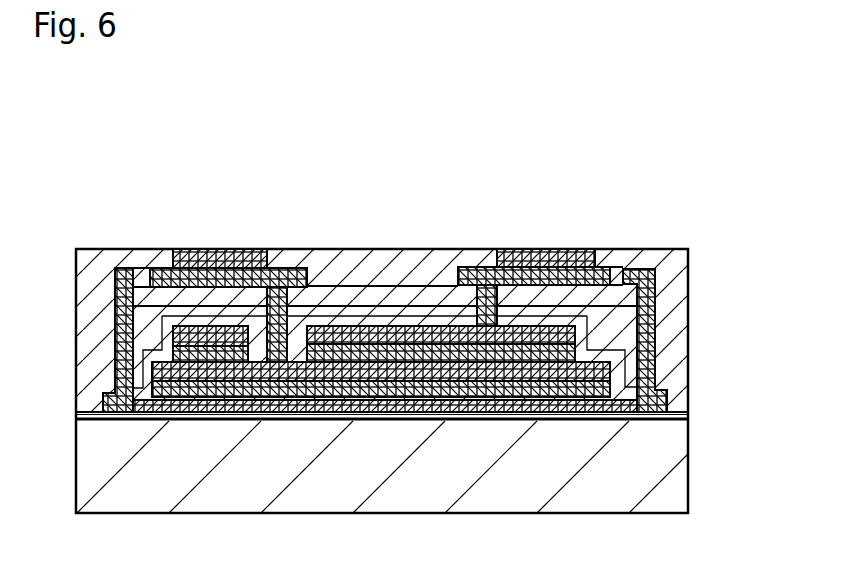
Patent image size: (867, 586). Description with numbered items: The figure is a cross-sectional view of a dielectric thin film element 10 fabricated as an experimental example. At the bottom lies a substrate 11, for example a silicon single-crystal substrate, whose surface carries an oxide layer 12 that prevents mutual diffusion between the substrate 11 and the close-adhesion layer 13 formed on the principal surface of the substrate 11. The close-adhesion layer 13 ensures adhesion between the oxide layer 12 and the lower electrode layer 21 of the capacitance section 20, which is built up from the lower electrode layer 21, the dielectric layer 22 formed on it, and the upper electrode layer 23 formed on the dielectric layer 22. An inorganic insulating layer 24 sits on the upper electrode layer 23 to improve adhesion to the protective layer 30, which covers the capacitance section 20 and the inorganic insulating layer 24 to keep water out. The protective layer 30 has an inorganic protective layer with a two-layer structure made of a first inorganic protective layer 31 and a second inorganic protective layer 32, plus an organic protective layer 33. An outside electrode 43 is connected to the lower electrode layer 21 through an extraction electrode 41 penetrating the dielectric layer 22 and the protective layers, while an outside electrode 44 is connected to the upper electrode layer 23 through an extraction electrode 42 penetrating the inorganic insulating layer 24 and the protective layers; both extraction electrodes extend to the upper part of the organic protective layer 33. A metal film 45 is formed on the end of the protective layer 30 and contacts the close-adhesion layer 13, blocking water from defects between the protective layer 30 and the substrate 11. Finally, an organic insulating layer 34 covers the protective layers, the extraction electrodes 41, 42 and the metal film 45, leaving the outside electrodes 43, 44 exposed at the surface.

The dielectric thin film element 10 is at (58, 109).
The substrate 11 is at (608, 487).
The oxide layer 12 is at (637, 419).
The close-adhesion layer 13 is at (622, 415).
The capacitance section 20 is at (737, 290).
The lower electrode layer 21 is at (612, 392).
The dielectric layer 22 is at (578, 352).
The upper electrode layer 23 is at (600, 320).
The inorganic insulating layer 24 is at (612, 280).
The protective layer 30 is at (145, 198).
The first inorganic protective layer 31 is at (230, 316).
The second inorganic protective layer 32 is at (192, 307).
The organic protective layer 33 is at (150, 298).
The organic insulating layer 34 is at (88, 288).
The extraction electrode 41 is at (318, 249).
The extraction electrode 42 is at (480, 270).
The outside electrode 43 is at (262, 249).
The outside electrode 44 is at (543, 250).
The metal film 45 is at (650, 256).